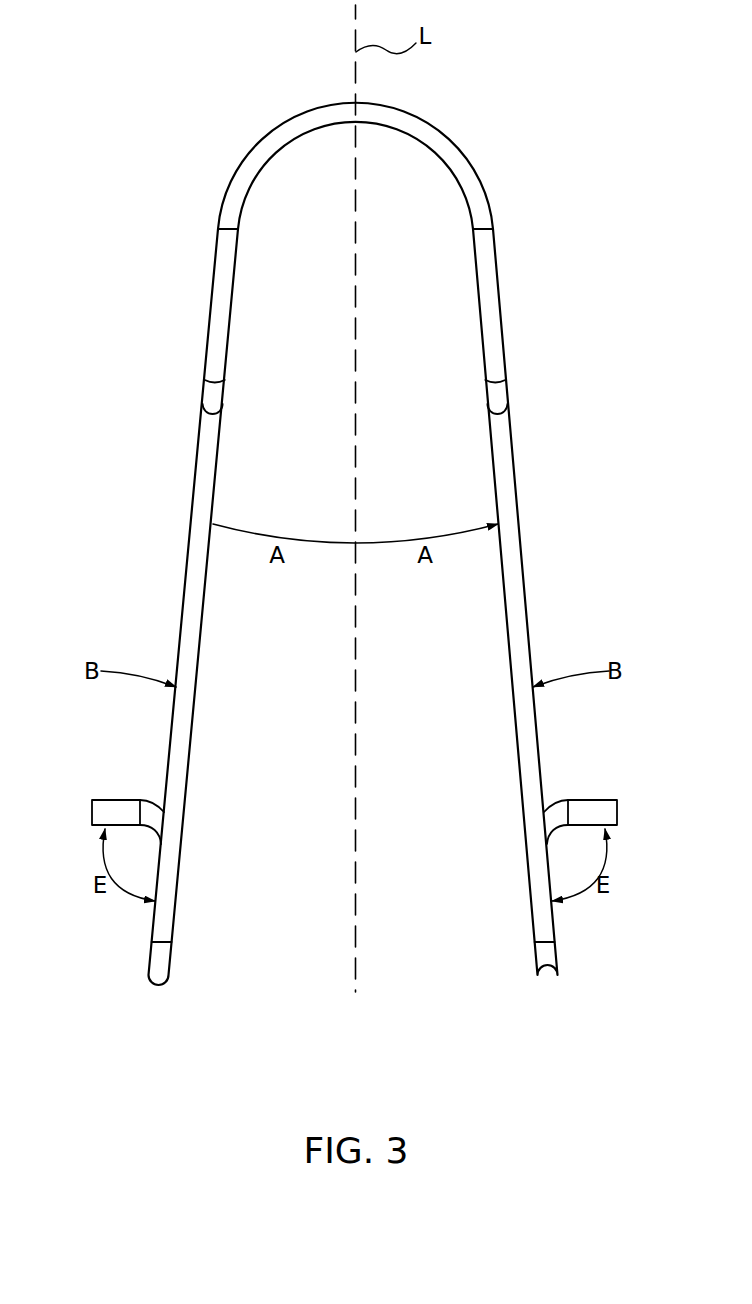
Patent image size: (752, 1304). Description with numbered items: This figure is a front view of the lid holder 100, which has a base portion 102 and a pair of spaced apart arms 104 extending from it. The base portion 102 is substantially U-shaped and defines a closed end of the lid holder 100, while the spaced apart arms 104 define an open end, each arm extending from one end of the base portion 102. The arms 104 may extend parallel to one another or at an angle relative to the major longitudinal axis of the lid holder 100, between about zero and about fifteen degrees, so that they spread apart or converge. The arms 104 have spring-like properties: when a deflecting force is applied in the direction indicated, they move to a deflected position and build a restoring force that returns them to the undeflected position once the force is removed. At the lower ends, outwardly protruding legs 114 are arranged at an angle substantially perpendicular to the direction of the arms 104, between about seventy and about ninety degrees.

The lid holder 100 is at (561, 201).
The base portion 102 is at (313, 117).
The spaced apart arms 104 is at (190, 582).
The legs 114 is at (120, 815).